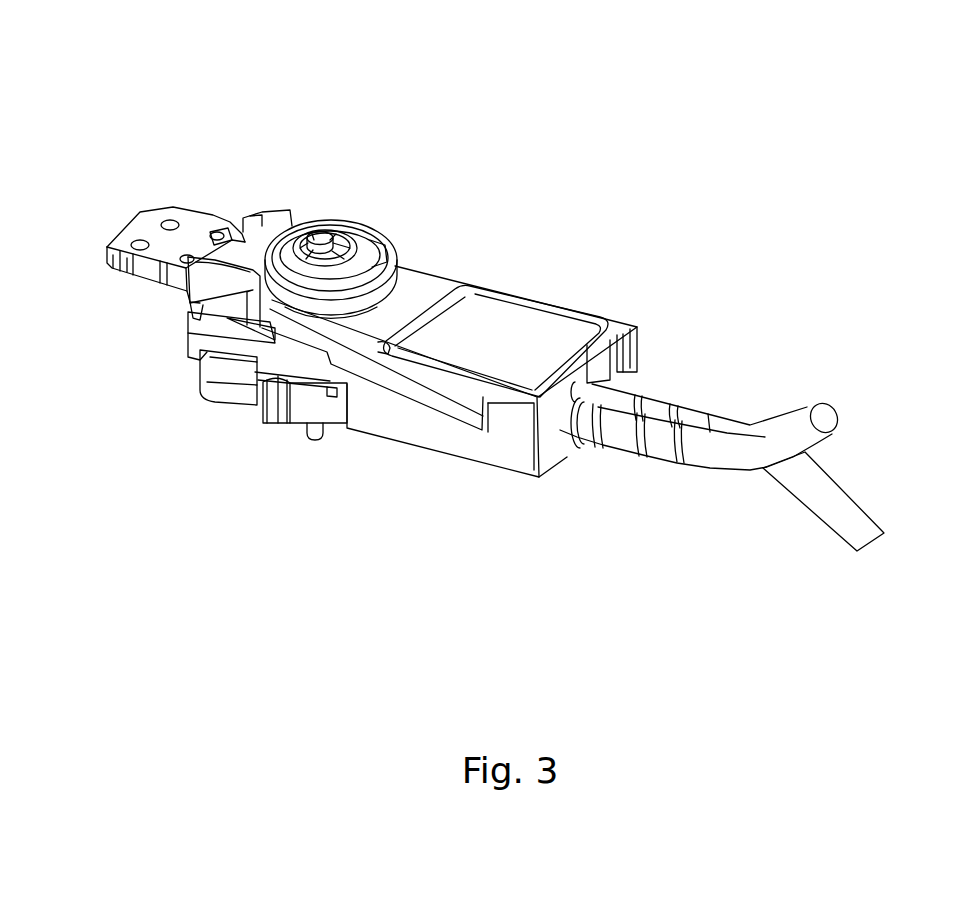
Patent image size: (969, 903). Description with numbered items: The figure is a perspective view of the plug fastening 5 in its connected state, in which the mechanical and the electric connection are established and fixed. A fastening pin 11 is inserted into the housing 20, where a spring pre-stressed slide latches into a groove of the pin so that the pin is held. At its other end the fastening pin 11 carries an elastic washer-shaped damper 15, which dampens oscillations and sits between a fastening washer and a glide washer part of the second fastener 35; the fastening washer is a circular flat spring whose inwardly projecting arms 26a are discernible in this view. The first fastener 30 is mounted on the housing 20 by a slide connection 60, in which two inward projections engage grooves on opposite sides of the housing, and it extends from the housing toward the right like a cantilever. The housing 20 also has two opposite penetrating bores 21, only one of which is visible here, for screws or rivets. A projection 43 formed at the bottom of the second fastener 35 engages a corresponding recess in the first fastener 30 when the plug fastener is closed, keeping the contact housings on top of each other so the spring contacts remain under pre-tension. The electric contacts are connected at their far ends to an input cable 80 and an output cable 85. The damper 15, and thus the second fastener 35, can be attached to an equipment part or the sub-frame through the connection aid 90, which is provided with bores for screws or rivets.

The plug fastening 5 is at (506, 80).
The fastening pin 11 is at (321, 232).
The damper 15 is at (383, 240).
The arms of flat spring 26a is at (338, 234).
The second fastener 35 is at (424, 290).
The projection 43 is at (457, 402).
The first fastener 30 is at (387, 420).
The housing 20 is at (273, 400).
The penetrating bore 21 is at (283, 402).
The slide connection 60 is at (190, 355).
The input cable 80 is at (707, 455).
The output cable 85 is at (845, 513).
The connection aid 90 is at (143, 230).